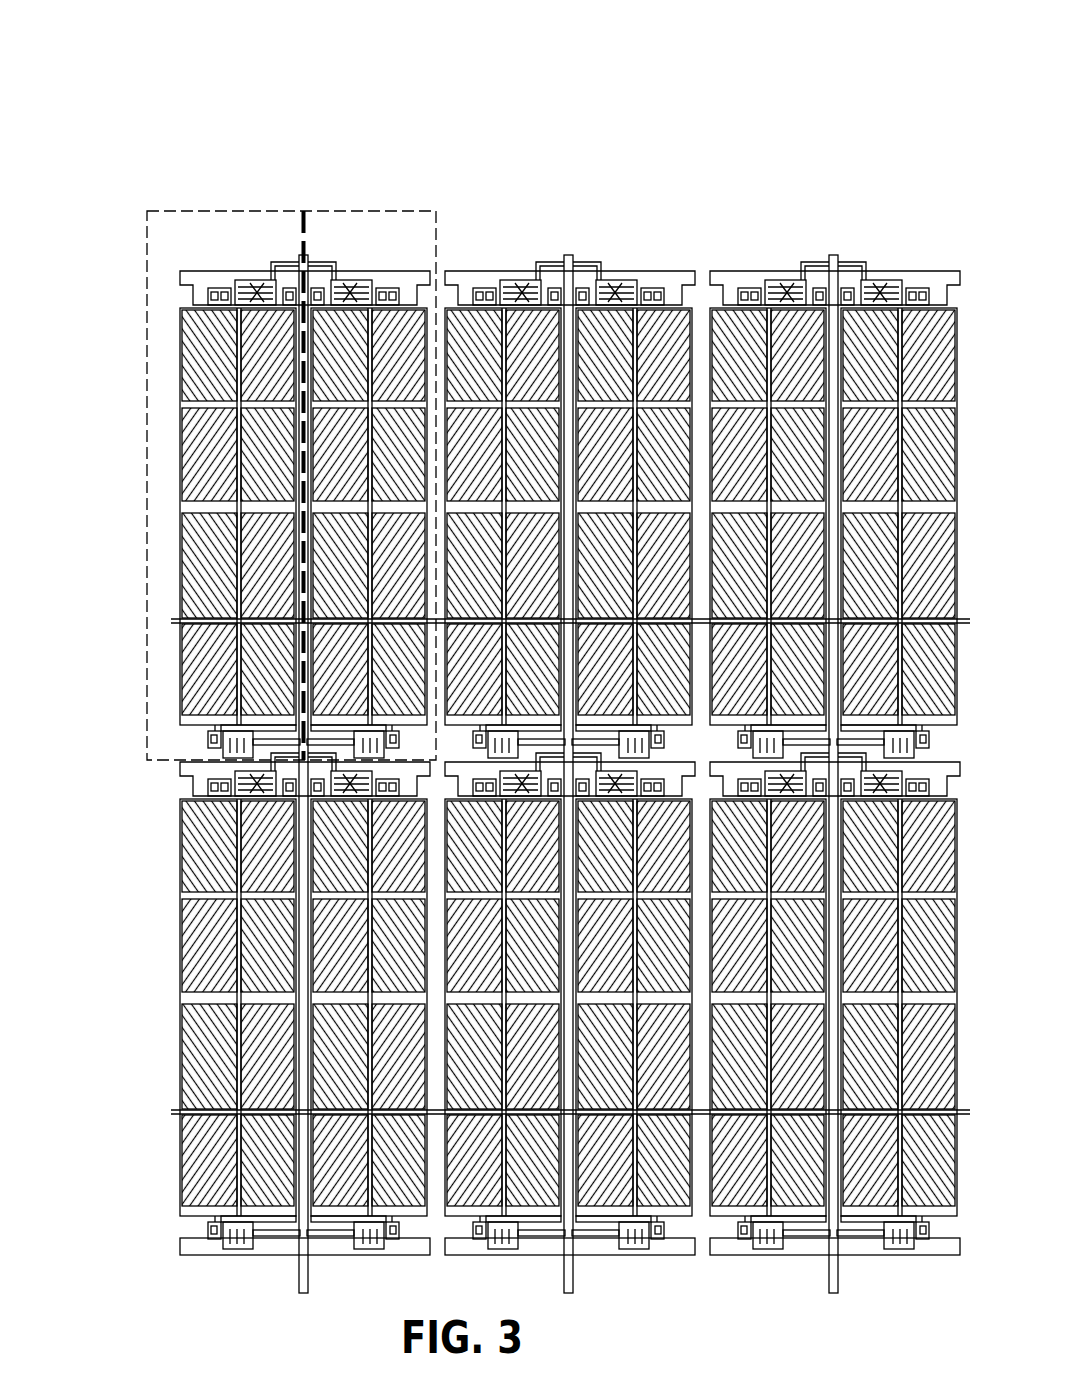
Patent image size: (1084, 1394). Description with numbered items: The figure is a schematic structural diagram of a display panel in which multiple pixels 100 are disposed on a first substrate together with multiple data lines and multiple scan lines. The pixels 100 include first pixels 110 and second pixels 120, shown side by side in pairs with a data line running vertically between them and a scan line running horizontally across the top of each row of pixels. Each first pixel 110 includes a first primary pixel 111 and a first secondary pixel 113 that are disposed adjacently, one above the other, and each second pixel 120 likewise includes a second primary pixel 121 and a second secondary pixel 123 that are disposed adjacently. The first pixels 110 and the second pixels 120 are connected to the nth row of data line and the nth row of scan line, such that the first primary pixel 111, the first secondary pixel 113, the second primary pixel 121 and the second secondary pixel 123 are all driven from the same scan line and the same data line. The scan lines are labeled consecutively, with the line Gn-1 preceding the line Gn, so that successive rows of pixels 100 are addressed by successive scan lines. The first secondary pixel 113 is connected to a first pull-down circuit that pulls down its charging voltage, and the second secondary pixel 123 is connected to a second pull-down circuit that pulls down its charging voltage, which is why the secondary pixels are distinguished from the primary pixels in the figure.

The pixel 100 is at (342, 63).
The first pixel 110 is at (257, 252).
The second pixel 120 is at (347, 252).
The first primary pixel 111 is at (468, 338).
The first secondary pixel 113 is at (527, 557).
The second primary pixel 121 is at (606, 327).
The second secondary pixel 123 is at (660, 540).
The gate line n-1 Gn-1 is at (188, 273).
The gate line n Gn is at (188, 760).